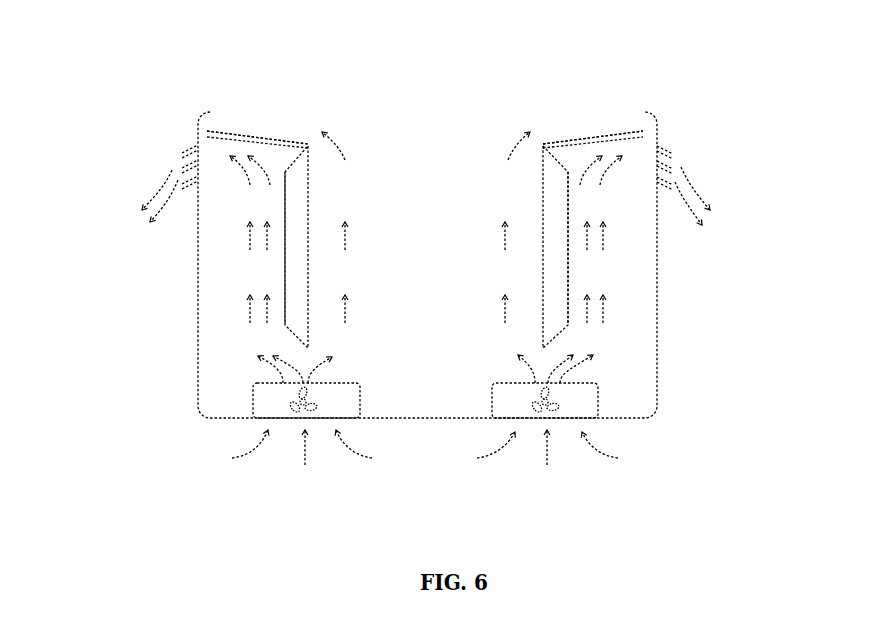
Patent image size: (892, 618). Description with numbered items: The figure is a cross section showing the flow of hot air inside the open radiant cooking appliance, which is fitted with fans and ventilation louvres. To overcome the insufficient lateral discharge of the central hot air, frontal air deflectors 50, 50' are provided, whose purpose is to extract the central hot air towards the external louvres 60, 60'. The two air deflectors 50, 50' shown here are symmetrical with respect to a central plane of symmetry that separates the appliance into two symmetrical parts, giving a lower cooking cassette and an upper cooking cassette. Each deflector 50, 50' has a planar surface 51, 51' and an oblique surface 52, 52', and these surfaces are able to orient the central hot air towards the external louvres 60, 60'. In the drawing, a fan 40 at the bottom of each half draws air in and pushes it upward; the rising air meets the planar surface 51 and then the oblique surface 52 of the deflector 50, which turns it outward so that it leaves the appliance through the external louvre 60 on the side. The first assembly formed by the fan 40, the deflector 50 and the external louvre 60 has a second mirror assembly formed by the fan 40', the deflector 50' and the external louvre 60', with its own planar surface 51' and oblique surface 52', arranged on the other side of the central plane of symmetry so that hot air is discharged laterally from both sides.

The fan 40 is at (244, 410).
The fan 40' is at (584, 410).
The frontal air deflector 50 is at (221, 187).
The frontal air deflector 50' is at (573, 191).
The planar surface 51 is at (212, 248).
The planar surface 51' is at (637, 248).
The oblique surface 52 is at (257, 97).
The oblique surface 52' is at (606, 95).
The external louvre 60 is at (119, 183).
The external louvre 60' is at (744, 157).